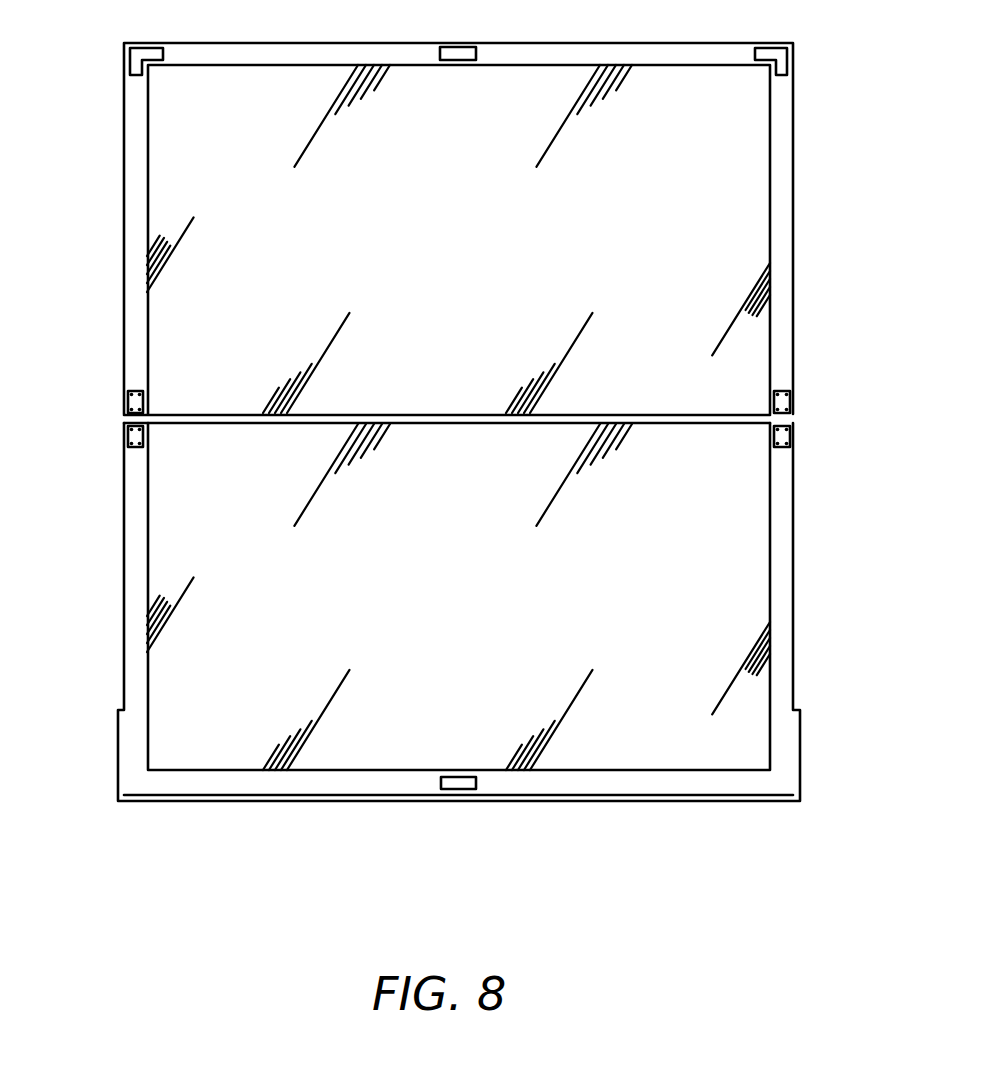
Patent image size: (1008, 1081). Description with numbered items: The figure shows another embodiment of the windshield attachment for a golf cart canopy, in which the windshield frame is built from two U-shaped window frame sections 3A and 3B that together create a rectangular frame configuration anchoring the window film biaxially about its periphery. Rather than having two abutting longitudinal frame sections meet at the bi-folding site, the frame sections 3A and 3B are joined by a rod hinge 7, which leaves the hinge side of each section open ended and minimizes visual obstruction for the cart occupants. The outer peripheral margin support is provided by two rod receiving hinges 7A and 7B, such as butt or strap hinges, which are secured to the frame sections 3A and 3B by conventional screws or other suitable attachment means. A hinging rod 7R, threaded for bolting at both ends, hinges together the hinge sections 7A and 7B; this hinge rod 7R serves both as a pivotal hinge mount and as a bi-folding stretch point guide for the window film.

The window frame section 3A is at (796, 230).
The window frame section 3B is at (797, 552).
The rod hinge 7 is at (457, 389).
The rod receiving hinge 7A is at (794, 434).
The rod receiving hinge 7B is at (123, 429).
The hinging rod 7R is at (723, 413).